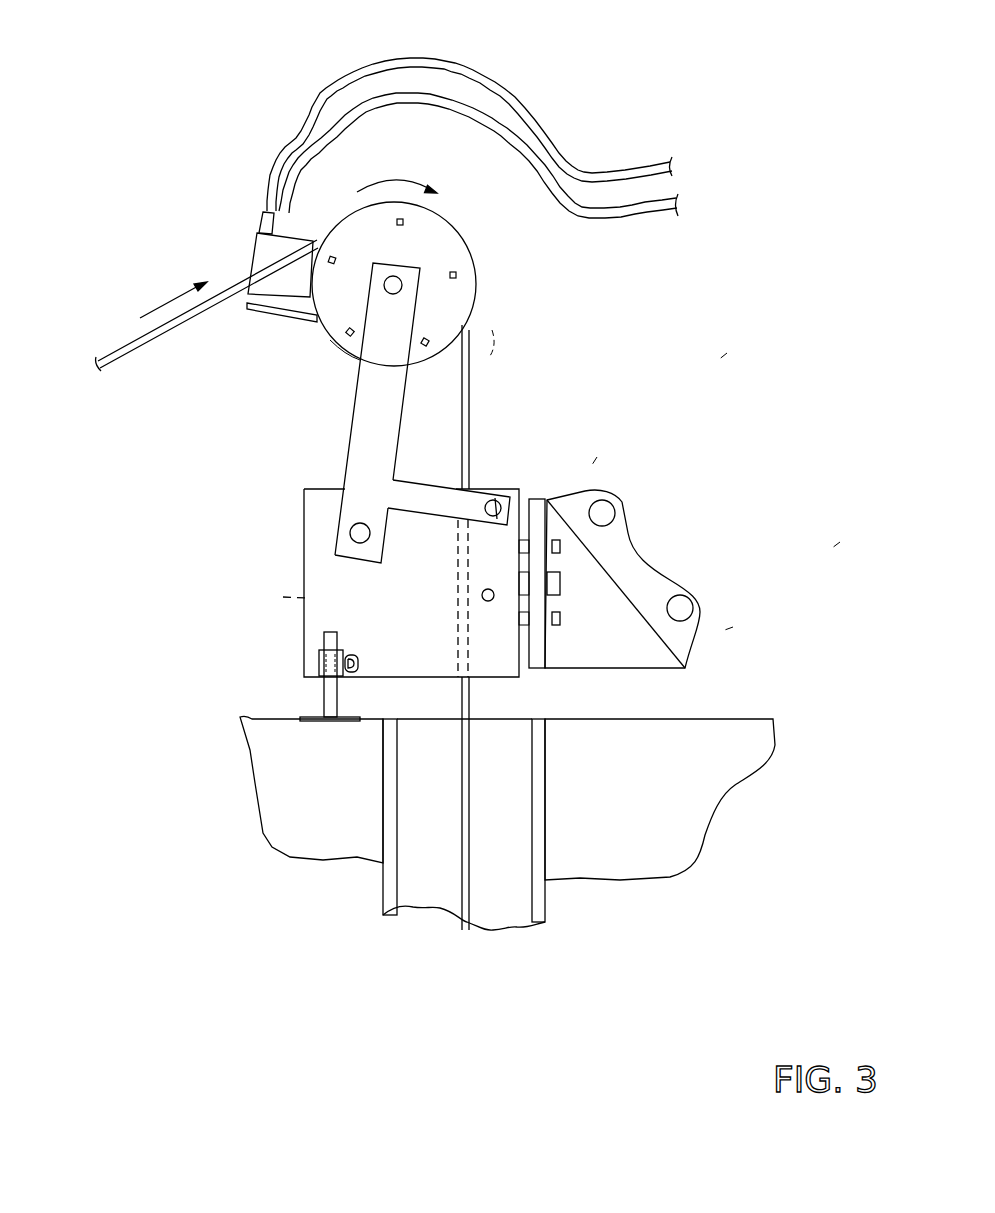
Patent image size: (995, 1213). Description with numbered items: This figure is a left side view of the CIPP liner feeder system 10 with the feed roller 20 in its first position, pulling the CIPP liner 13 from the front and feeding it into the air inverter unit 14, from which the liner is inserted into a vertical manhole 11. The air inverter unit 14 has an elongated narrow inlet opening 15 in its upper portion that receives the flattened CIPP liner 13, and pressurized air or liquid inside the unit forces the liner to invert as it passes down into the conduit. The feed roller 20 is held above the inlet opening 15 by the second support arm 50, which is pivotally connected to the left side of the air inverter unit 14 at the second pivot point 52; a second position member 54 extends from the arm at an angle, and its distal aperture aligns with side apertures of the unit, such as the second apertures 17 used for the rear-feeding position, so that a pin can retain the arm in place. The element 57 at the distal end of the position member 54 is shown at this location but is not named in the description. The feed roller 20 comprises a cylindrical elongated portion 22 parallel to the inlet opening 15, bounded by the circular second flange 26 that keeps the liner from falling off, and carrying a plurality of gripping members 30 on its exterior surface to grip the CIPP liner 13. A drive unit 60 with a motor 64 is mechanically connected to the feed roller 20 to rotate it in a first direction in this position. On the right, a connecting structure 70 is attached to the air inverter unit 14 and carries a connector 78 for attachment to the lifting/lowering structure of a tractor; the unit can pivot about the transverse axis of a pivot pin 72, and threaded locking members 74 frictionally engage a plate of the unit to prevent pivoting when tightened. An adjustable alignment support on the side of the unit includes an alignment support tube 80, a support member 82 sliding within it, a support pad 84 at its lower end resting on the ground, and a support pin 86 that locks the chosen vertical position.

The CIPP liner feeder system 10 is at (200, 120).
The manhole 11 is at (383, 885).
The CIPP liner 13 is at (130, 343).
The air inverter unit 14 is at (292, 505).
The inlet opening 15 is at (271, 597).
The second apertures 17 is at (489, 602).
The feed roller 20 is at (490, 284).
The elongated portion 22 is at (529, 336).
The second flange 26 is at (327, 337).
The gripping members 30 is at (440, 278).
The second support arm 50 is at (355, 388).
The second pivot point 52 is at (350, 533).
The second position member 54 is at (473, 508).
The pin 57 is at (497, 498).
The drive unit 60 is at (270, 327).
The motor 64 is at (256, 248).
The connecting structure 70 is at (558, 655).
The pivot pin 72 is at (560, 585).
The locking members 74 is at (562, 545).
The connector 78 is at (652, 545).
The alignment support tube 80 is at (318, 653).
The support member 82 is at (322, 692).
The support pad 84 is at (303, 710).
The support pin 86 is at (298, 662).